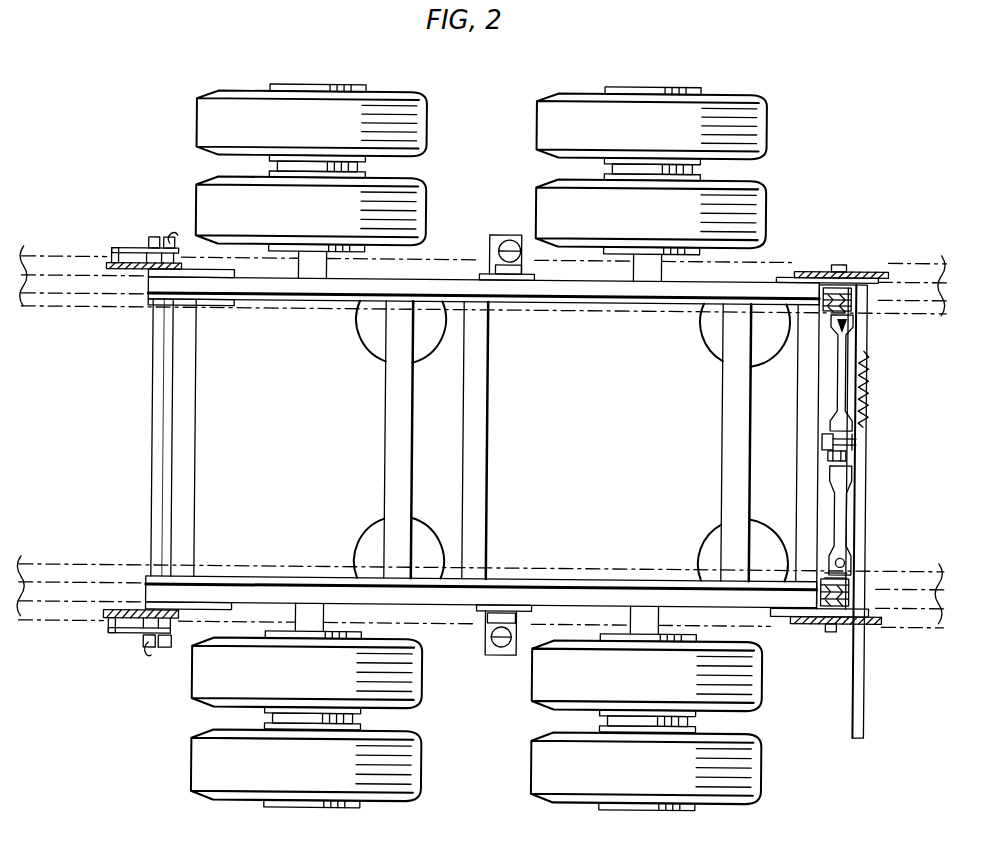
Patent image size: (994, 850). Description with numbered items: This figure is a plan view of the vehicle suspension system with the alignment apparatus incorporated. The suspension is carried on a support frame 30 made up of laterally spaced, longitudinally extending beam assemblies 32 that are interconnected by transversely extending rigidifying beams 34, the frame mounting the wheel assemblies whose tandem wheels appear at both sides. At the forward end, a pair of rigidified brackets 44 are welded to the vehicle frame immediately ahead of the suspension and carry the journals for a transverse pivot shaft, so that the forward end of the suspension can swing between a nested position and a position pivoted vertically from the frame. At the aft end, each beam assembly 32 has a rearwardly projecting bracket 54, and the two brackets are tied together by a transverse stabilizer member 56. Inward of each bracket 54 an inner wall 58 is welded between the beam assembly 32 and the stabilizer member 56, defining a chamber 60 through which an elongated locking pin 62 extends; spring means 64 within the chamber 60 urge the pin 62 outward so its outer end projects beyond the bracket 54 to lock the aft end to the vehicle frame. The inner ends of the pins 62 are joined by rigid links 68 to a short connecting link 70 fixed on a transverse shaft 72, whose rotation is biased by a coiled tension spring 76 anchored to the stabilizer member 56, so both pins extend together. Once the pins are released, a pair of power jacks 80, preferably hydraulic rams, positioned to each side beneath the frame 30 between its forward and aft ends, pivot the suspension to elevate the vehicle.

The support frame 30 is at (439, 279).
The beam assemblies 32 is at (582, 592).
The rigidifying beams 34 is at (483, 447).
The rigidified brackets 44 is at (125, 632).
The bracket 54 is at (812, 607).
The stabilizer member 56 is at (860, 470).
The inner wall 58 is at (845, 309).
The chamber 60 is at (870, 602).
The locking pin 62 is at (838, 567).
The spring means 64 is at (843, 595).
The rigid links 68 is at (838, 382).
The connecting link 70 is at (830, 437).
The transverse shaft 72 is at (822, 452).
The coiled tension spring 76 is at (862, 372).
The power jacks 80 is at (507, 235).